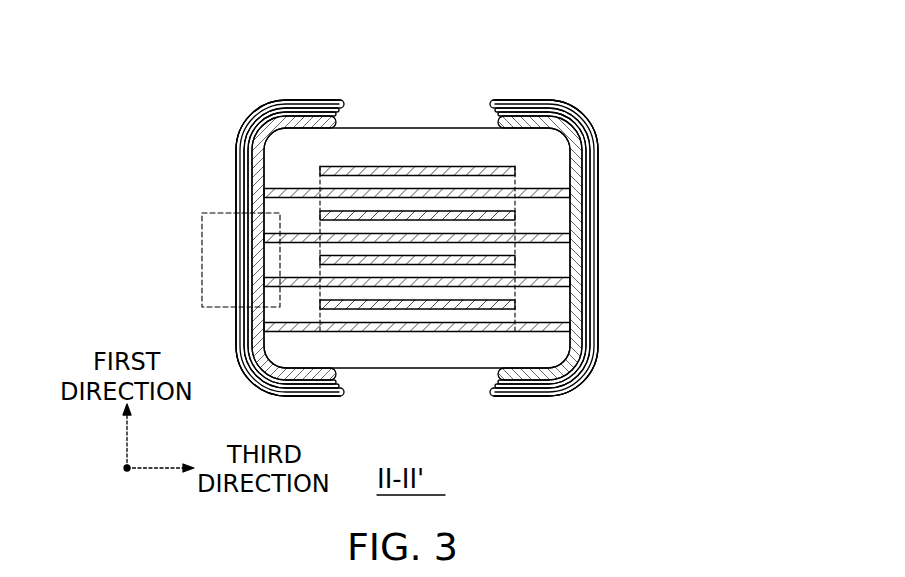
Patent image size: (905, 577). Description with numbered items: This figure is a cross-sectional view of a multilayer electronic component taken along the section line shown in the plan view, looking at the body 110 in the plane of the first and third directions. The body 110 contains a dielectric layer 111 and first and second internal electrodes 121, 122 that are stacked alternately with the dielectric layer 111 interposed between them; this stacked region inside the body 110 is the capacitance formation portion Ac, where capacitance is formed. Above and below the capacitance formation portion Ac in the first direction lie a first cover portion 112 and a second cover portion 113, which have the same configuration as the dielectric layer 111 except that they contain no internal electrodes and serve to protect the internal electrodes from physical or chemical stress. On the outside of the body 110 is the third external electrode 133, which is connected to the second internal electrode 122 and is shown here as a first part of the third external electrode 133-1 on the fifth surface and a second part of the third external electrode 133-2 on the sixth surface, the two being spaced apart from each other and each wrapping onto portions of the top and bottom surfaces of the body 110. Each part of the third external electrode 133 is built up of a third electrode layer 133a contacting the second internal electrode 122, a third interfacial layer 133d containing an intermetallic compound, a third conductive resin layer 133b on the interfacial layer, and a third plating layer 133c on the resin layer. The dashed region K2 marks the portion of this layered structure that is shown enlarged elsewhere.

The body 110 is at (386, 128).
The dielectric layer 111 is at (343, 203).
The first cover portion 112 is at (421, 133).
The second cover portion 113 is at (390, 352).
The first internal electrode 121 is at (450, 168).
The second internal electrode 122 is at (487, 190).
The capacitance formation portion Ac is at (452, 335).
The region K2 is at (202, 287).
The third external electrode 133 is at (75, 190).
The 3-1-th external electrode 133-1 is at (134, 52).
The 3-2-th external electrode 133-2 is at (703, 50).
The third electrode layer 133a is at (297, 112).
The third conductive resin layer 133b is at (249, 139).
The third plating layer 133c is at (241, 163).
The third interfacial layer 133d is at (238, 186).